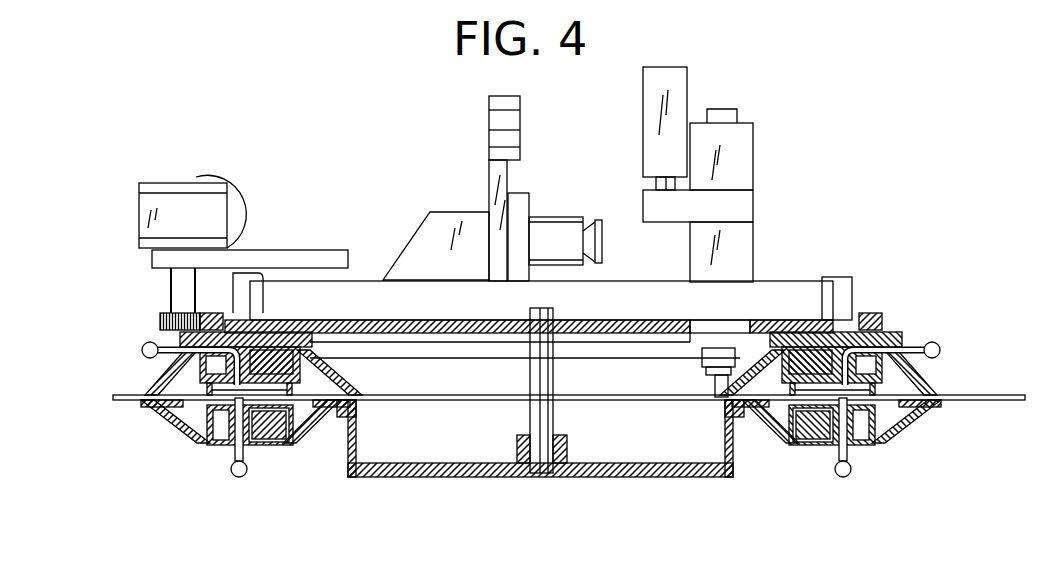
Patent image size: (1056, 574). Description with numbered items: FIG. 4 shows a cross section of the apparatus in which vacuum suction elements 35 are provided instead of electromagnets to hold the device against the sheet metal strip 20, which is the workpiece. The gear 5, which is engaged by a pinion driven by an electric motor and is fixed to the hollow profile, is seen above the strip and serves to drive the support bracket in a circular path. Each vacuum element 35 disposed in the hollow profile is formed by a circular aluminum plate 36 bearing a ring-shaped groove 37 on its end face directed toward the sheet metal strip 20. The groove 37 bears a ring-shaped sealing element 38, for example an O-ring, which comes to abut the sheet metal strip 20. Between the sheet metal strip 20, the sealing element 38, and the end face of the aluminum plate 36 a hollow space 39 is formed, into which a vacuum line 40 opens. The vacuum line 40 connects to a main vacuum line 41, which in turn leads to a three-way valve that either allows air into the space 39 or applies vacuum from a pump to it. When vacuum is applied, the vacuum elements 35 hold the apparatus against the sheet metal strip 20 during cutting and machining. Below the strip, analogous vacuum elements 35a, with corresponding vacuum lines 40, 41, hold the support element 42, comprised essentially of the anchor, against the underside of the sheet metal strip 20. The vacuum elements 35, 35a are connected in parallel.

The gear 5 is at (888, 320).
The sheet metal strip 20 is at (1010, 405).
The vacuum suction element 35 is at (132, 320).
The vacuum element 35a is at (172, 456).
The circular aluminum plate 36 is at (278, 338).
The ring-shaped groove 37 is at (873, 317).
The sealing element 38 is at (883, 390).
The hollow space 39 is at (273, 447).
The vacuum line 40 is at (157, 362).
The main vacuum line 41 is at (141, 350).
The support element 42 is at (927, 417).